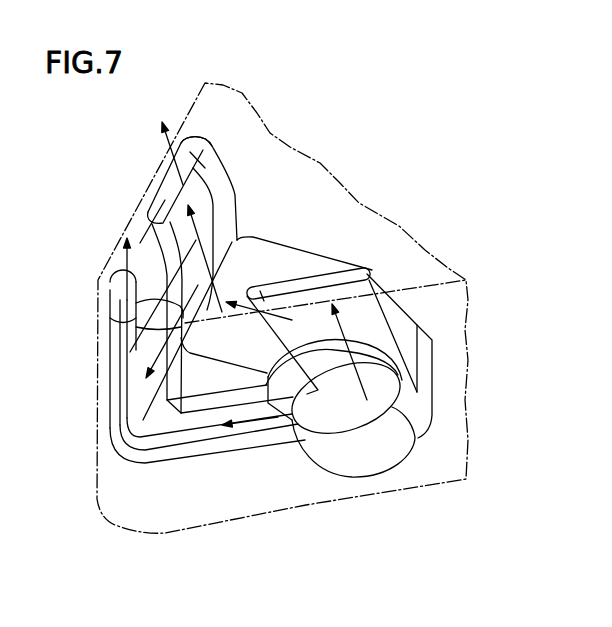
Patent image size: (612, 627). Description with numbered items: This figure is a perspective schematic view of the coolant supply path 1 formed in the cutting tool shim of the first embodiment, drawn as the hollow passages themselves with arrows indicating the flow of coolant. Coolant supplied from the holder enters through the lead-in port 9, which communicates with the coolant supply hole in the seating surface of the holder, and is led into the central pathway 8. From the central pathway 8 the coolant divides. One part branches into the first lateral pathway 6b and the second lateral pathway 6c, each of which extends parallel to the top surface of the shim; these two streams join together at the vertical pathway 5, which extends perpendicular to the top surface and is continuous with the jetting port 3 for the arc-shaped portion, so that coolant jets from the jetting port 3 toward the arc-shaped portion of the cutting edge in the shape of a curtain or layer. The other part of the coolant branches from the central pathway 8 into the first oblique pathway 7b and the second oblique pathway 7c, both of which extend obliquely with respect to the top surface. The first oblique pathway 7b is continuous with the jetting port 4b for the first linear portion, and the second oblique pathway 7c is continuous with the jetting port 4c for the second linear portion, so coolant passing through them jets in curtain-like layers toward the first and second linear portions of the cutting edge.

The coolant supply path 1 is at (350, 120).
The jetting port for arc-shaped portion 3 is at (108, 301).
The jetting port for first linear portion 4b is at (345, 268).
The jetting port for second linear portion 4c is at (152, 213).
The vertical pathway 5 is at (117, 378).
The first lateral pathway 6b is at (207, 434).
The second lateral pathway 6c is at (133, 219).
The first oblique pathway 7b is at (367, 317).
The second oblique pathway 7c is at (208, 200).
The central pathway 8 is at (269, 263).
The lead-in port 9 is at (416, 440).